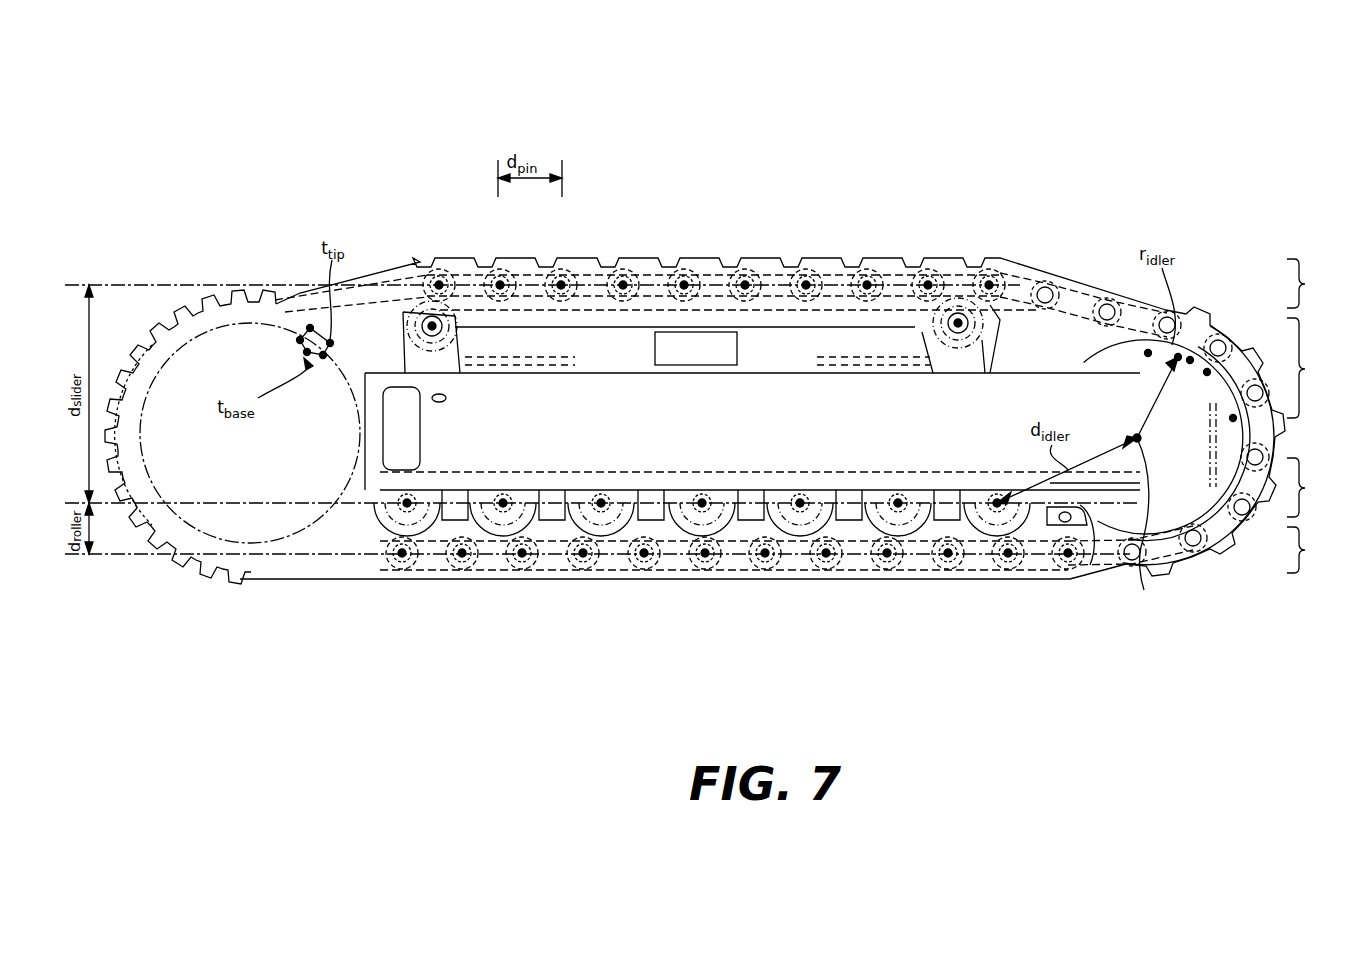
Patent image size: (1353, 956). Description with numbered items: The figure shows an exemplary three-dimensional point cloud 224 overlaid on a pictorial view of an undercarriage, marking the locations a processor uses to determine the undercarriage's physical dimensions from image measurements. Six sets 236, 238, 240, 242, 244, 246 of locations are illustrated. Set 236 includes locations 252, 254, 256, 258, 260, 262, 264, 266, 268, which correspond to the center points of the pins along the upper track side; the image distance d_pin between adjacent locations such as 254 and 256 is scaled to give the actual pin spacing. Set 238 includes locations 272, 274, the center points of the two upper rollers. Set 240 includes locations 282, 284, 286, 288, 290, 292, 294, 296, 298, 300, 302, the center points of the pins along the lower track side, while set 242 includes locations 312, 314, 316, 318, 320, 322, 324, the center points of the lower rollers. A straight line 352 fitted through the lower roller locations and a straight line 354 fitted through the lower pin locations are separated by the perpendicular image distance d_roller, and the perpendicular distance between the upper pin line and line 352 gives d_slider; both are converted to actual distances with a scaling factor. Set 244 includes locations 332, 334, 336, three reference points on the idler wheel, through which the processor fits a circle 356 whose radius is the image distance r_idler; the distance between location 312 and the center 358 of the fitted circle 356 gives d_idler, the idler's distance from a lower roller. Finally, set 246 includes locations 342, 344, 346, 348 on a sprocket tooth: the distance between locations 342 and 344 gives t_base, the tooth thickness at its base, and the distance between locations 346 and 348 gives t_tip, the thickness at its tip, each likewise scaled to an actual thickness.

The 3D point cloud 224 is at (806, 136).
The set of locations 236 is at (1314, 296).
The set of locations 238 is at (1000, 320).
The set of locations 240 is at (1314, 560).
The set of locations 242 is at (1314, 495).
The set of locations 244 is at (1314, 368).
The set of locations 246 is at (305, 358).
The location 252 is at (439, 283).
The location 254 is at (500, 283).
The location 256 is at (561, 283).
The location 258 is at (623, 283).
The location 260 is at (684, 283).
The location 262 is at (745, 283).
The location 264 is at (806, 283).
The location 266 is at (867, 283).
The location 268 is at (989, 283).
The location 272 is at (432, 332).
The location 274 is at (958, 330).
The location 282 is at (1008, 559).
The location 284 is at (948, 559).
The location 286 is at (887, 559).
The location 288 is at (826, 559).
The location 290 is at (765, 559).
The location 292 is at (705, 559).
The location 294 is at (644, 559).
The location 296 is at (583, 559).
The location 298 is at (522, 559).
The location 300 is at (462, 559).
The location 302 is at (402, 559).
The location 312 is at (997, 503).
The location 314 is at (898, 503).
The location 316 is at (800, 503).
The location 318 is at (702, 503).
The location 320 is at (601, 503).
The location 322 is at (503, 503).
The location 324 is at (407, 503).
The location 332 is at (1148, 353).
The location 334 is at (1207, 372).
The location 336 is at (1233, 418).
The location 342 is at (300, 340).
The location 344 is at (323, 355).
The location 346 is at (310, 328).
The location 348 is at (330, 343).
The straight line 352 is at (1090, 565).
The straight line 354 is at (1075, 527).
The fitted circle 356 is at (1180, 355).
The center 358 is at (1144, 590).